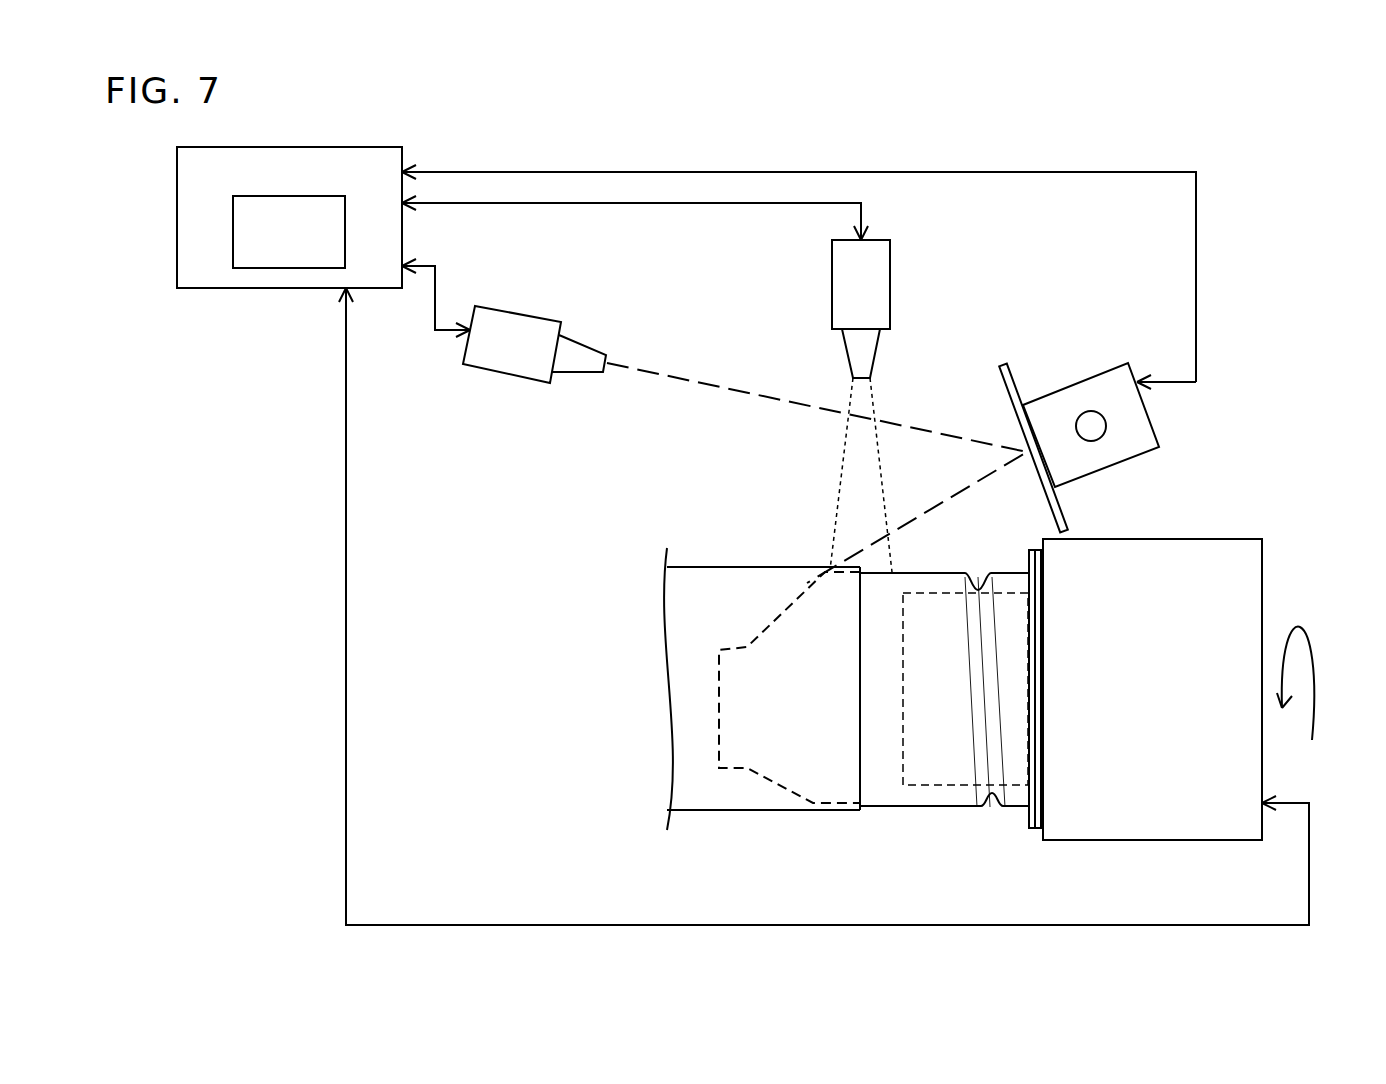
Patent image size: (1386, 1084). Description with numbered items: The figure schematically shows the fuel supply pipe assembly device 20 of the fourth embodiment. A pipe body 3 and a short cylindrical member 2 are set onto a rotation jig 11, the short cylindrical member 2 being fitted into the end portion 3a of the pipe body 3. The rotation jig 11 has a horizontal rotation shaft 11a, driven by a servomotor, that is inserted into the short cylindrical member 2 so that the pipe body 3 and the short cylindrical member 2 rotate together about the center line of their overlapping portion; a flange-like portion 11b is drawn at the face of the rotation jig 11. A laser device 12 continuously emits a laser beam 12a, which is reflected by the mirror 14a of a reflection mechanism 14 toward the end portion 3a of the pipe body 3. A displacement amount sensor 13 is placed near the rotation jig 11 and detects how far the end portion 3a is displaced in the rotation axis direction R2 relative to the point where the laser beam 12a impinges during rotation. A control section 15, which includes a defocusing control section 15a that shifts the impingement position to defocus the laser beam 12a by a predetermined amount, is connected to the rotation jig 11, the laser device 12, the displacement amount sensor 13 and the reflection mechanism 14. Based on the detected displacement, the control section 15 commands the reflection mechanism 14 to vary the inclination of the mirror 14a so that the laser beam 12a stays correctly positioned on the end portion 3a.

The fuel supply pipe assembly device 20 is at (1220, 148).
The control section 15 is at (196, 288).
The defocusing control section 15a is at (272, 268).
The displacement amount sensor 13 is at (890, 283).
The laser device 12 is at (515, 374).
The laser beam 12a is at (917, 527).
The mirror 14a is at (999, 370).
The reflection mechanism 14 is at (1159, 440).
The rotation jig 11 is at (1178, 538).
The rotation shaft 11a is at (962, 807).
The flange 11b is at (1077, 840).
The pipe body 3 is at (753, 812).
The end portion 3a is at (868, 810).
The short cylindrical member 2 is at (892, 807).
The rotation axis direction R2 is at (1320, 685).